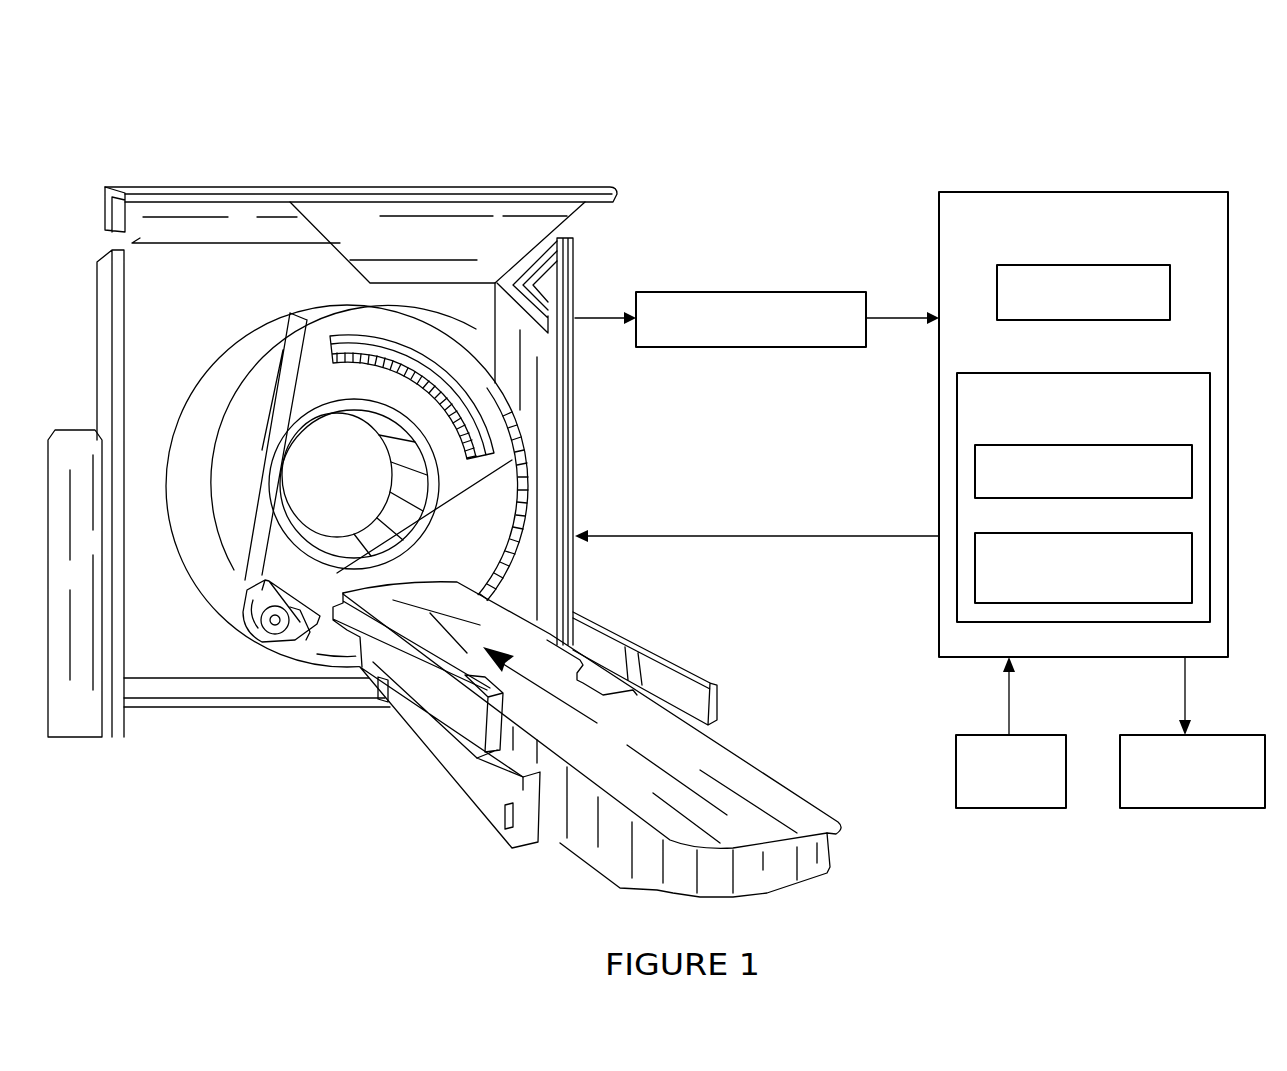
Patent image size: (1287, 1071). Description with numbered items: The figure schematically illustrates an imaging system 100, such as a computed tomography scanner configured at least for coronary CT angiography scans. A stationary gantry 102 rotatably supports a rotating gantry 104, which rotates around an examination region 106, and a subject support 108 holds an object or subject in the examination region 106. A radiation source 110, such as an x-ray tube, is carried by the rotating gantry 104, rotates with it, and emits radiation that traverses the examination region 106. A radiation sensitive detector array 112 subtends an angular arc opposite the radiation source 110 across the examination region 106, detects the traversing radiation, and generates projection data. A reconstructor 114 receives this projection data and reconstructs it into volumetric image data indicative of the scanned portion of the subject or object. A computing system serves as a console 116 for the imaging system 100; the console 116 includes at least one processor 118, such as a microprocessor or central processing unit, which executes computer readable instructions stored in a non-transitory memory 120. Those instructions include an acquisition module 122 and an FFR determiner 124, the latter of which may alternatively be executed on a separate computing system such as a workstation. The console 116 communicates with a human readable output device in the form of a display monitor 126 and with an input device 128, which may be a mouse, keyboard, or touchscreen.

The imaging system 100 is at (125, 85).
The stationary gantry 102 is at (108, 337).
The rotating gantry 104 is at (307, 382).
The examination region 106 is at (338, 498).
The subject support 108 is at (767, 793).
The radiation source 110 is at (275, 632).
The radiation sensitive detector array 112 is at (478, 402).
The reconstructor 114 is at (750, 290).
The console 116 is at (1083, 192).
The processor 118 is at (1085, 265).
The memory 120 is at (1085, 373).
The acquisition module 122 is at (1085, 445).
The FFR determiner 124 is at (1085, 533).
The display monitor 126 is at (1190, 808).
The input device 128 is at (1012, 808).